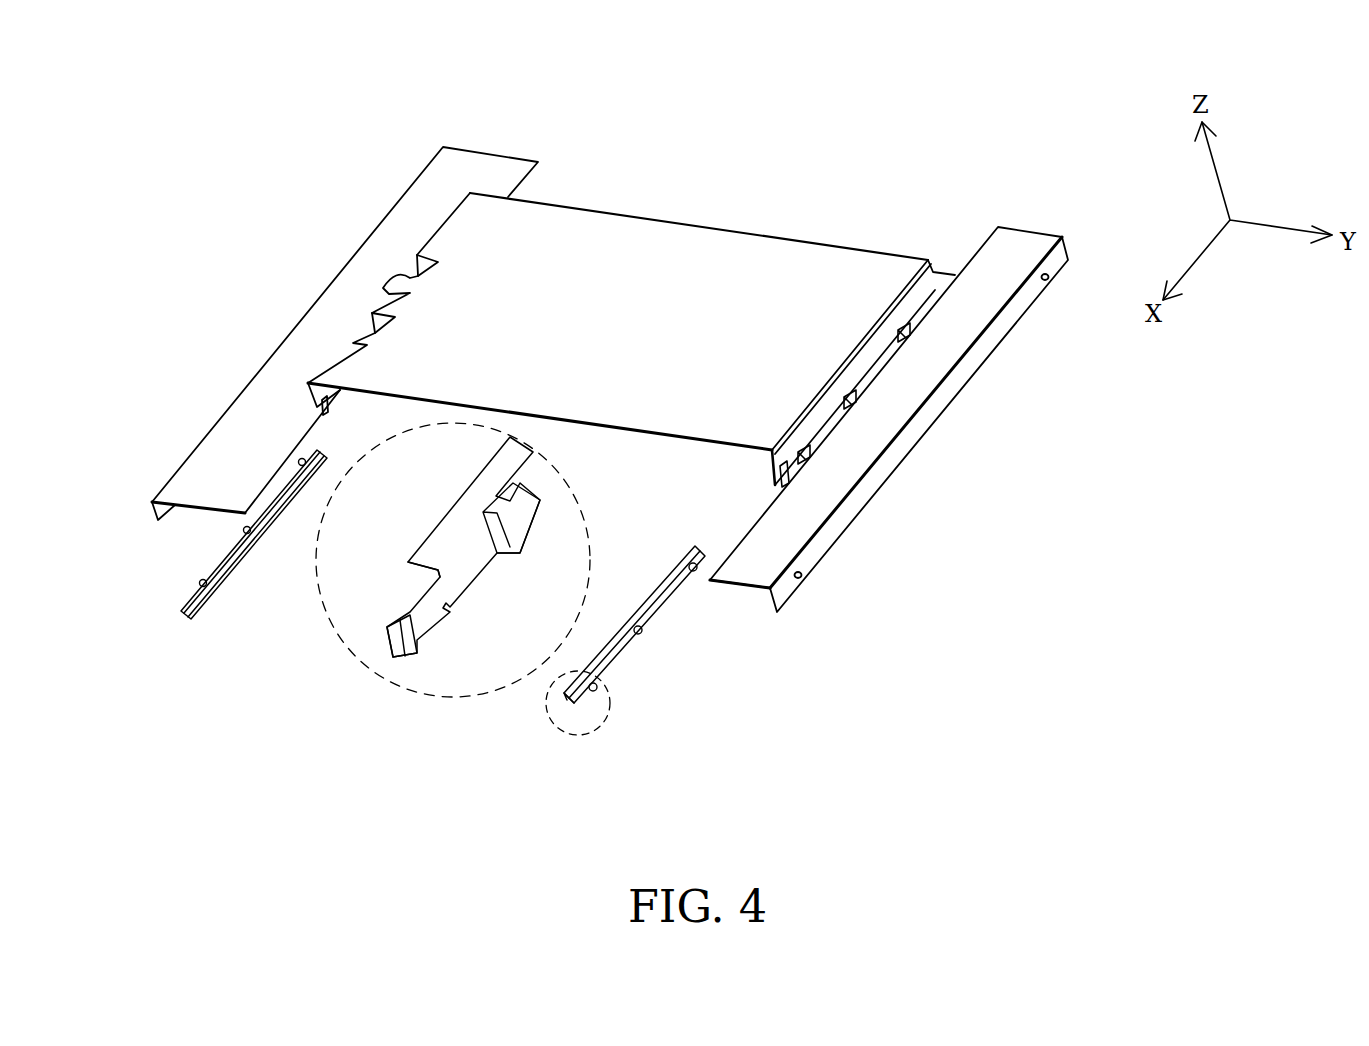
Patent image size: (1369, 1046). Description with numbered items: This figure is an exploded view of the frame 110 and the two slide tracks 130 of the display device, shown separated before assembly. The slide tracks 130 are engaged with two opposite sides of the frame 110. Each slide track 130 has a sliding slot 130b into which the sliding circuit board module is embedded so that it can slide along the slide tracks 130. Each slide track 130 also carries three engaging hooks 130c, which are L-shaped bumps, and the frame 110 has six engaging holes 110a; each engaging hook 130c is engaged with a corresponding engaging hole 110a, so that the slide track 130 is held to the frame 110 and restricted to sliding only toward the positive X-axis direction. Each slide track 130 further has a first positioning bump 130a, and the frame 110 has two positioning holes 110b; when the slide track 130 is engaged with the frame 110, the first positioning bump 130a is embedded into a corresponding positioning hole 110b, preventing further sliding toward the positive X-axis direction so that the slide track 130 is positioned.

The frame 110 is at (765, 258).
The engaging hole 110a is at (926, 459).
The positioning hole 110b is at (798, 498).
The slide track 130 is at (447, 591).
The first positioning bump 130a is at (557, 740).
The sliding slot 130b is at (394, 671).
The engaging hook 130c is at (459, 596).